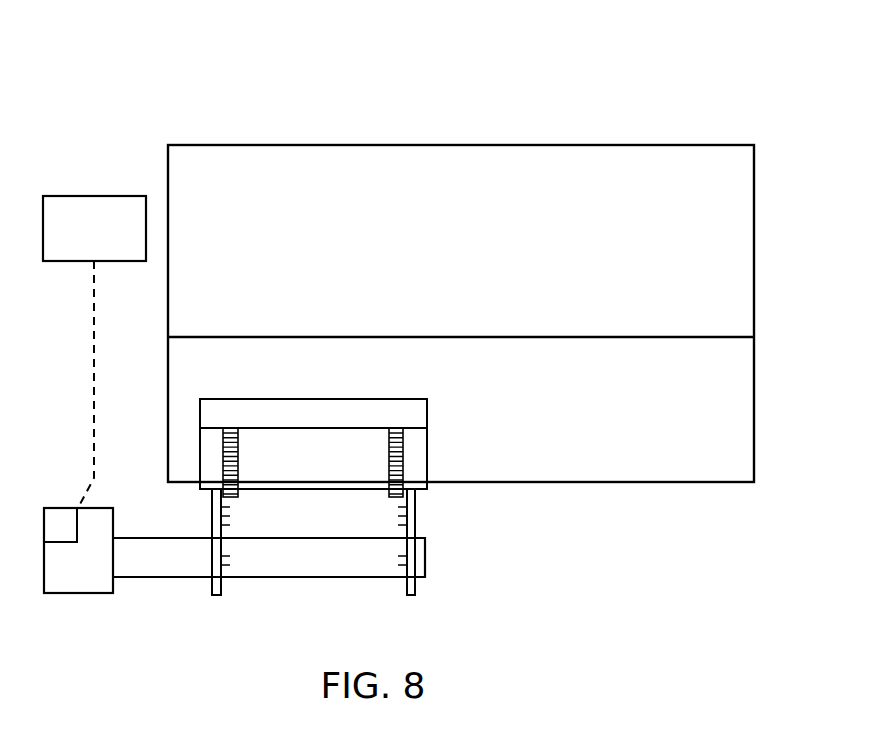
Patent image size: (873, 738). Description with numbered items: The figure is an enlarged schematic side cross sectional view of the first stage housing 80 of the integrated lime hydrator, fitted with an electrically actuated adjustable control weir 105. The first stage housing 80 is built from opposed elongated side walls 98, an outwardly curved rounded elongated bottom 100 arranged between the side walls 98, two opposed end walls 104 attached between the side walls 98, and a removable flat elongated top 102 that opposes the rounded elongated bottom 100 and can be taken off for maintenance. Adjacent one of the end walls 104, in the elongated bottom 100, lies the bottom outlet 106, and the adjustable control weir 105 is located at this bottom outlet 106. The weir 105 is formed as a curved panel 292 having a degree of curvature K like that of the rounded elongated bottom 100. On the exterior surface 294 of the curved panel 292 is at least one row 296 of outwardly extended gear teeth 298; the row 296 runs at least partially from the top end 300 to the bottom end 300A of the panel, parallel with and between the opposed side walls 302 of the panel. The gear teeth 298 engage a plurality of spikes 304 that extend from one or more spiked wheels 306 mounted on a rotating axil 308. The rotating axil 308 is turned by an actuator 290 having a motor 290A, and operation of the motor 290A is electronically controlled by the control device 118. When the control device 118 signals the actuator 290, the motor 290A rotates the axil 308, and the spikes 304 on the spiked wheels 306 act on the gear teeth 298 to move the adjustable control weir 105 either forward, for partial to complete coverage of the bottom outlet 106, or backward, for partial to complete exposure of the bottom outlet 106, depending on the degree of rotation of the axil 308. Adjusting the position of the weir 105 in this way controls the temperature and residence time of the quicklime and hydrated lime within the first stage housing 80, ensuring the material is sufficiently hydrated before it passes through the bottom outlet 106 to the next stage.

The first stage housing 80 is at (688, 67).
The elongated side walls 98 is at (740, 228).
The rounded elongated bottom 100 is at (736, 483).
The removable flat elongated top 102 is at (669, 145).
The end walls 104 is at (168, 163).
The adjustable control weir 105 is at (415, 440).
The bottom outlet 106 is at (420, 412).
The control device 118 is at (73, 242).
The actuator 290 is at (76, 585).
The motor 290A is at (62, 508).
The curved panel 292 is at (342, 490).
The exterior surface 294 is at (270, 437).
The row of gear teeth 296 is at (222, 440).
The gear teeth 298 is at (388, 441).
The top end 300 is at (327, 424).
The bottom end 300A is at (260, 493).
The side walls 302 is at (200, 466).
The spikes 304 is at (219, 597).
The spiked wheels 306 is at (210, 592).
The rotating axil 308 is at (312, 580).
The degree of curvature K is at (423, 493).